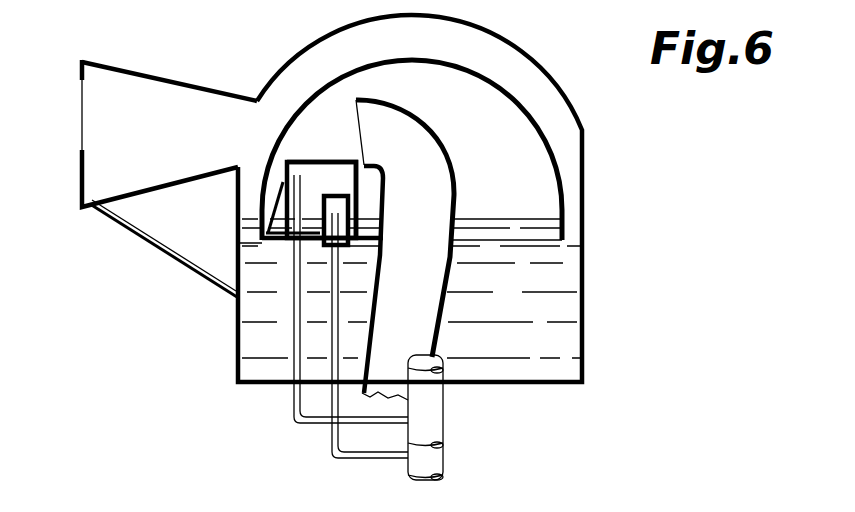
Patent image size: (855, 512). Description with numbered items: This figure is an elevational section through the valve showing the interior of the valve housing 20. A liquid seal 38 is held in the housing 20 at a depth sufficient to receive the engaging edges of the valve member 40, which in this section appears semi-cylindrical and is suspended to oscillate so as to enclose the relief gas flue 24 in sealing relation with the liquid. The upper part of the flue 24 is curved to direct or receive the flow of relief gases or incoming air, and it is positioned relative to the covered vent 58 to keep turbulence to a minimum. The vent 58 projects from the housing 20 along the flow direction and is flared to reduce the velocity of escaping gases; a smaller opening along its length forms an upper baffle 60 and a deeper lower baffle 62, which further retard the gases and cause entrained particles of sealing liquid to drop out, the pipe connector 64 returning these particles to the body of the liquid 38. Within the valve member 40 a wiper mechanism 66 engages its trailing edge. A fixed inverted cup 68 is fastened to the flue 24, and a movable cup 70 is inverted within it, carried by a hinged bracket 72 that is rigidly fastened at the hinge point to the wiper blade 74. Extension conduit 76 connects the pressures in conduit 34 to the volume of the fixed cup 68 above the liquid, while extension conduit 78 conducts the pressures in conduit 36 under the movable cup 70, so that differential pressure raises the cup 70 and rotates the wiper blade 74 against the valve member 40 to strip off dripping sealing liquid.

The valve housing 20 is at (586, 208).
The relief gas flue 24 is at (446, 298).
The pressure transmitting conduit 34 is at (437, 407).
The pressure transmitting conduit 36 is at (441, 457).
The liquid seal 38 is at (572, 302).
The valve member 40 is at (530, 110).
The covered vent 58 is at (176, 82).
The upper baffle 60 is at (80, 70).
The lower baffle 62 is at (80, 175).
The pipe connector 64 is at (173, 253).
The wiper mechanism 66 is at (308, 159).
The fixed inverted cup 68 is at (330, 160).
The movable cup 70 is at (335, 196).
The hinged bracket 72 is at (277, 236).
The wiper blade 74 is at (276, 205).
The extension conduit 76 is at (295, 330).
The extension conduit 78 is at (337, 325).